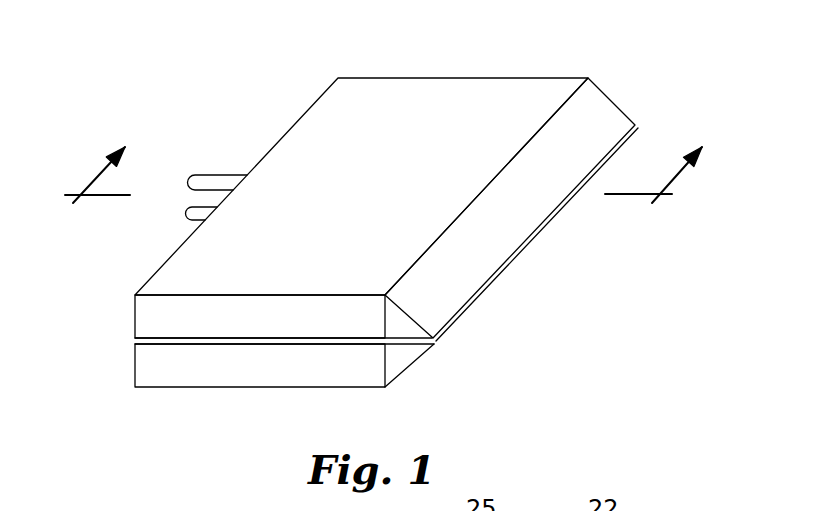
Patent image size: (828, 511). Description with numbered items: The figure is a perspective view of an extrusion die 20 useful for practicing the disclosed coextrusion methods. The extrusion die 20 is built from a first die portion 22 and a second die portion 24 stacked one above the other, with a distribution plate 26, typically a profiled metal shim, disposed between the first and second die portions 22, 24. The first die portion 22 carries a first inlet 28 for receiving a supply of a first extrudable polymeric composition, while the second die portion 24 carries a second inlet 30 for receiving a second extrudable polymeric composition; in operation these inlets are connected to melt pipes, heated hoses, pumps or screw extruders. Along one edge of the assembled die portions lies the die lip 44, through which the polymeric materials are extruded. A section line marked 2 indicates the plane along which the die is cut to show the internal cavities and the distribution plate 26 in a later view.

The extrusion die 20 is at (402, 239).
The first die portion 22 is at (490, 80).
The second die portion 24 is at (267, 380).
The distribution plate 26 is at (180, 343).
The first inlet 28 is at (212, 178).
The second inlet 30 is at (188, 213).
The die lip 44 is at (437, 335).
The section line 2- 2 is at (389, 158).